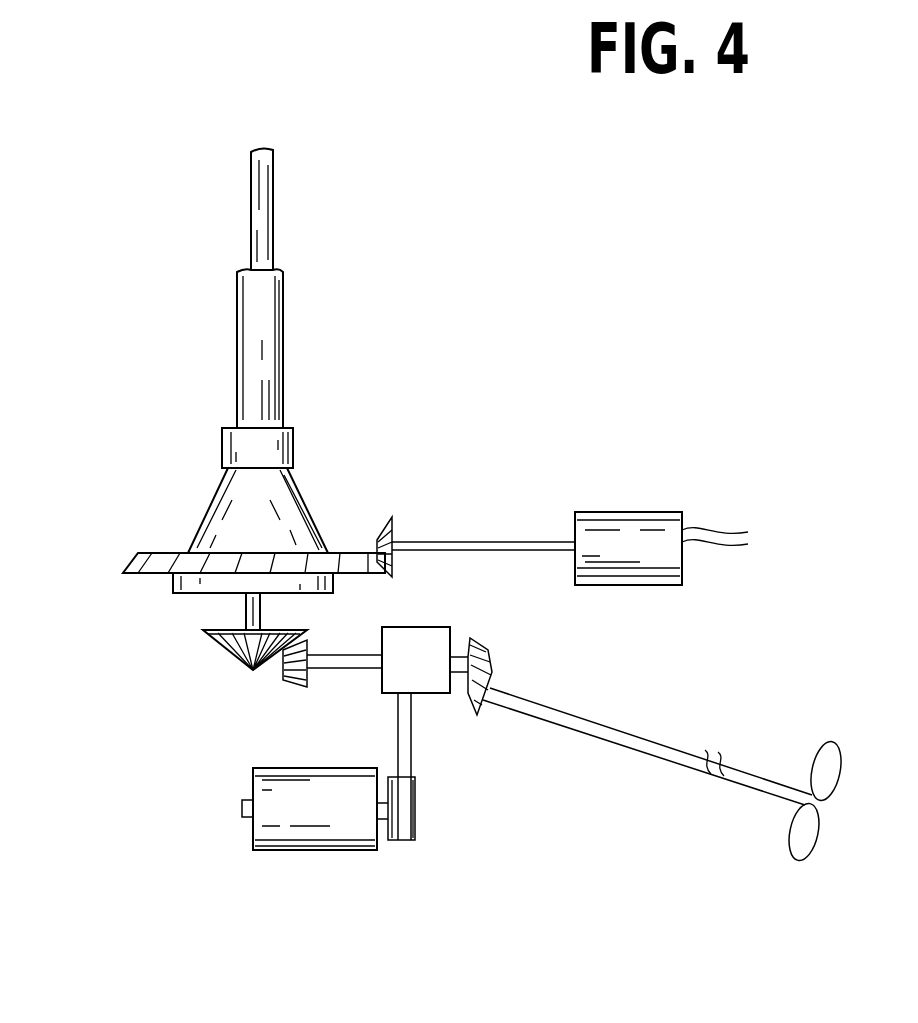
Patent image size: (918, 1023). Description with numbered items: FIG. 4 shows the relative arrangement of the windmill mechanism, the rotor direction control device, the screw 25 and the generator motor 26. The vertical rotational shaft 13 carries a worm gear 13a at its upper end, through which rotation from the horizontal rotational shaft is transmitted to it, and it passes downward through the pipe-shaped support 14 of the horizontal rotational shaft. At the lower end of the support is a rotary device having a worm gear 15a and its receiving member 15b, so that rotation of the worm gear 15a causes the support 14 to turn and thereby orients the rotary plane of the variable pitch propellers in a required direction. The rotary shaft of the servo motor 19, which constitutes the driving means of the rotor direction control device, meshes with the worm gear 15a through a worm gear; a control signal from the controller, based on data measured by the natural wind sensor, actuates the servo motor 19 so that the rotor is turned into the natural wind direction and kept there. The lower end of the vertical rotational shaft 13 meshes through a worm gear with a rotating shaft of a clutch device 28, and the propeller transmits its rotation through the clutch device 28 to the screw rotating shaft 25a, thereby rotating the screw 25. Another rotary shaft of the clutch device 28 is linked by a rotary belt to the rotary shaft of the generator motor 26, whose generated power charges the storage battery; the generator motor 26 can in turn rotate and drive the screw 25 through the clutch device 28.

The vertical rotational shaft 13 is at (275, 212).
The worm gear 13a is at (232, 658).
The support 14 is at (283, 370).
The worm gear 15a is at (167, 550).
The receiving member 15b is at (185, 592).
The servo motor 19 is at (640, 512).
The screw 25 is at (828, 742).
The screw rotating shaft 25a is at (643, 753).
The generator motor 26 is at (283, 850).
The clutch device 28 is at (433, 688).